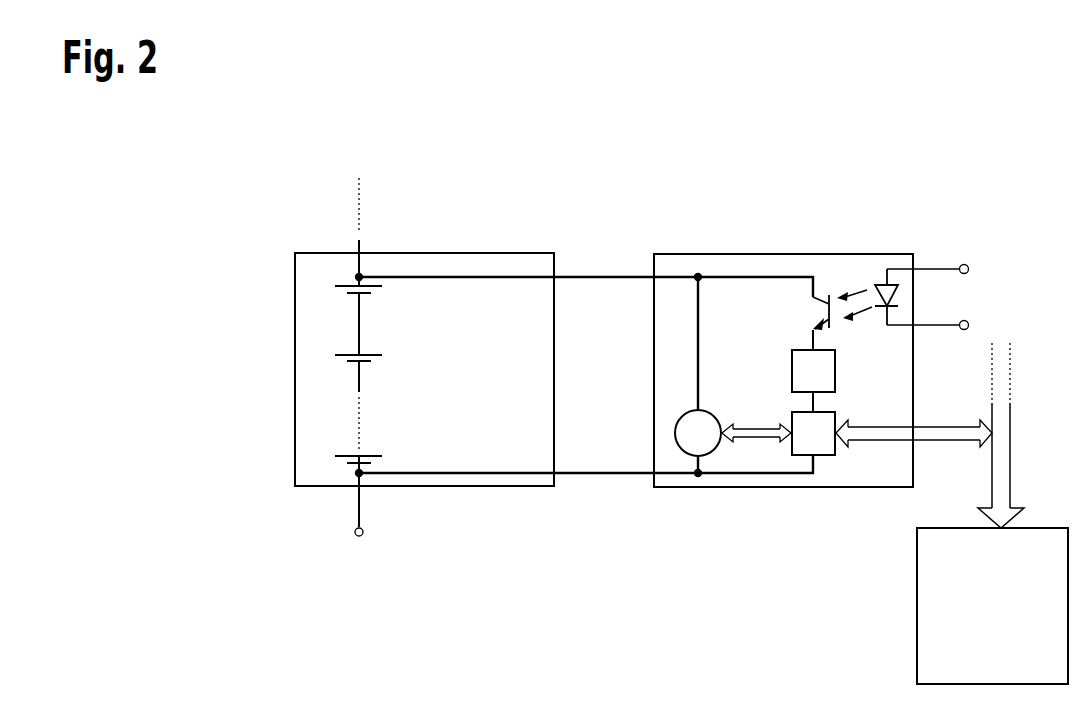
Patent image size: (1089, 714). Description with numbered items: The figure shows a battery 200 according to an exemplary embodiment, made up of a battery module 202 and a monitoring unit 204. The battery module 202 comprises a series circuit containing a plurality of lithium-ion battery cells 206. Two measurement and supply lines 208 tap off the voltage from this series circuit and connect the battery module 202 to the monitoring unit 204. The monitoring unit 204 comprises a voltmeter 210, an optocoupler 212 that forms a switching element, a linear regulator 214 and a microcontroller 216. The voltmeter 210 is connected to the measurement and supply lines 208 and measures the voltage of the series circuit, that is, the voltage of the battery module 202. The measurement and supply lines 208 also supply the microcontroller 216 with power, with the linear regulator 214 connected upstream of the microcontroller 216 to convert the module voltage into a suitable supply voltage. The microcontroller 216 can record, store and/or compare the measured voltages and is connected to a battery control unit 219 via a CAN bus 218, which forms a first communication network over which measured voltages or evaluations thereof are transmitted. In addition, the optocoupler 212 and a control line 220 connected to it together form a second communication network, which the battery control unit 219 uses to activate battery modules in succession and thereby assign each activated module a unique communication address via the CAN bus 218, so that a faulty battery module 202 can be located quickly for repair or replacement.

The battery 200 is at (878, 131).
The battery module 202 is at (452, 253).
The monitoring unit 204 is at (735, 253).
The lithium-ion battery cells 206 is at (353, 365).
The measurement and supply lines 208 is at (606, 275).
The voltmeter 210 is at (689, 455).
The optocoupler 212 is at (886, 284).
The linear regulator 214 is at (792, 363).
The microcontroller 216 is at (826, 456).
The CAN bus 218 is at (940, 427).
The battery control unit 219 is at (917, 622).
The control line 220 is at (955, 273).